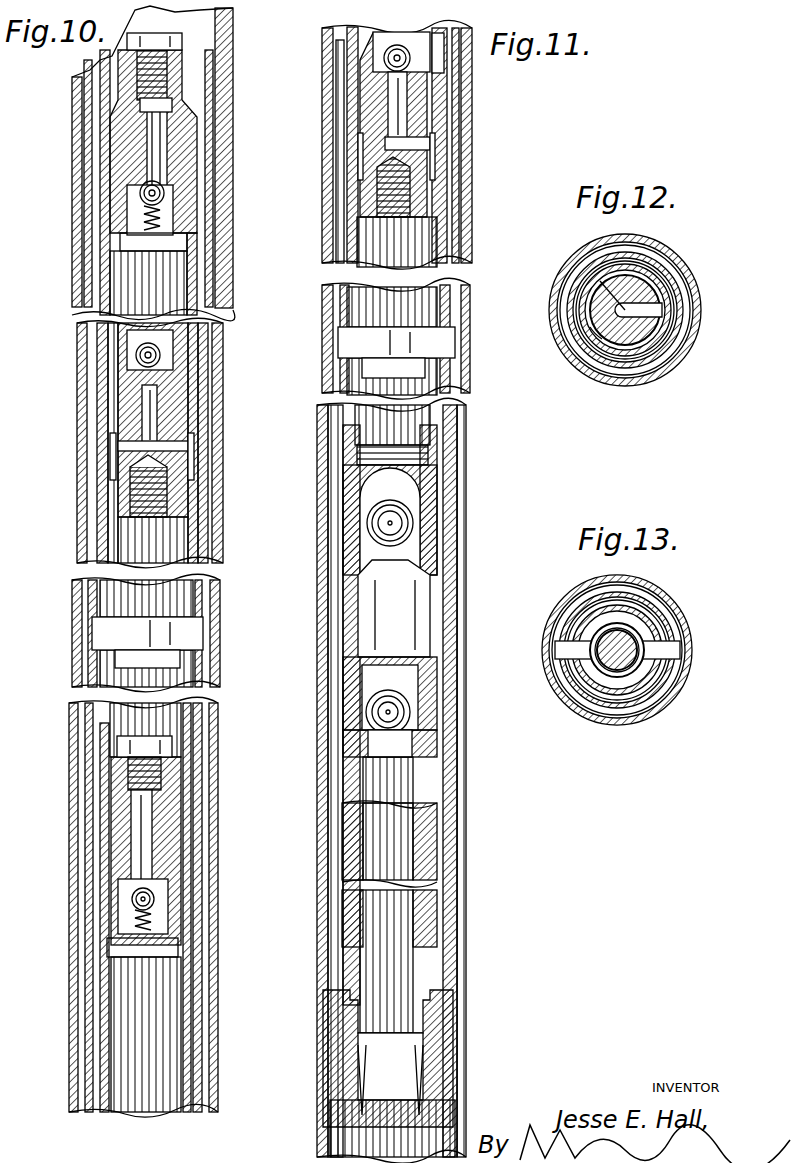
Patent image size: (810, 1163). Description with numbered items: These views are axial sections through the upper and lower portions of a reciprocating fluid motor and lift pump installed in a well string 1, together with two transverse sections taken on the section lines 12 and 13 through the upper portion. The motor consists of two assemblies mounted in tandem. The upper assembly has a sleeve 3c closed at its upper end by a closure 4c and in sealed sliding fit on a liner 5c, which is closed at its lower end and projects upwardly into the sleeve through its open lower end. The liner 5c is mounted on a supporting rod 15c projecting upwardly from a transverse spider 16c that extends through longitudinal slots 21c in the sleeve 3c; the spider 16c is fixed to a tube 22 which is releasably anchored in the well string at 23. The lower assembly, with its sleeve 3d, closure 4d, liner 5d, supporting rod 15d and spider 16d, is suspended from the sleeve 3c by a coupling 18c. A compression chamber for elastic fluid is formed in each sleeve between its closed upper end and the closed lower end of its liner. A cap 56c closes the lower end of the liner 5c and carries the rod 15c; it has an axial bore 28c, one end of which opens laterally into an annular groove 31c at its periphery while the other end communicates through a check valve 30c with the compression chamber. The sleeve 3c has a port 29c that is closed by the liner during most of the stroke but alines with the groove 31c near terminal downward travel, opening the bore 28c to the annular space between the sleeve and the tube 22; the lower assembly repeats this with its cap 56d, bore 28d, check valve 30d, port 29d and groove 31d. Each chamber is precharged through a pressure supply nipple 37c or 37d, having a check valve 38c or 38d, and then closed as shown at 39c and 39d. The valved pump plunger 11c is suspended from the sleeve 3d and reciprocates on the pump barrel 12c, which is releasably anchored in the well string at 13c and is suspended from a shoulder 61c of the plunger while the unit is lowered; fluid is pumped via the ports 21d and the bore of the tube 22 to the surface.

In FIG. 10, the well string 1 is at (78, 518).
In FIG. 11, the well string 1 is at (468, 182).
In FIG. 12, the well string 1 is at (680, 260).
In FIG. 13, the well string 1 is at (670, 614).
In FIG. 10, the tube 22 is at (92, 215).
In FIG. 11, the tube 22 is at (458, 222).
In FIG. 12, the tube 22 is at (674, 350).
In FIG. 13, the tube 22 is at (680, 650).
In FIG. 10, the sleeve 3c is at (106, 278).
In FIG. 12, the sleeve 3c is at (658, 352).
In FIG. 13, the sleeve 3c is at (592, 602).
In FIG. 10, the sleeve 3d is at (102, 1022).
In FIG. 11, the sleeve 3d is at (352, 198).
In FIG. 10, the closure 4c is at (120, 125).
In FIG. 10, the closure 4d is at (172, 835).
In FIG. 10, the liner 5c is at (112, 300).
In FIG. 10, the liner 5d is at (100, 1110).
In FIG. 11, the liner 5d is at (443, 70).
In FIG. 10, the anchoring means 23 is at (163, 120).
In FIG. 10, the pressure supply nipple 37c is at (157, 120).
In FIG. 10, the pressure supply nipple 37d is at (138, 840).
In FIG. 10, the nipple closure 39c is at (178, 40).
In FIG. 10, the nipple closure 39d is at (172, 746).
In FIG. 10, the check valve 38c is at (165, 195).
In FIG. 10, the check valve 38d is at (132, 905).
In FIG. 10, the cap 56c is at (125, 410).
In FIG. 12, the cap 56c is at (612, 345).
In FIG. 11, the cap 56d is at (375, 147).
In FIG. 10, the check valve 30c is at (158, 352).
In FIG. 11, the check valve 30d is at (392, 58).
In FIG. 10, the axial bore 28c is at (158, 410).
In FIG. 12, the axial bore 28c is at (600, 281).
In FIG. 11, the axial bore 28d is at (403, 112).
In FIG. 10, the port 29c is at (175, 445).
In FIG. 12, the port 29c is at (666, 310).
In FIG. 11, the port 29d is at (430, 145).
In FIG. 10, the annular groove 31c is at (192, 470).
In FIG. 12, the annular groove 31c is at (590, 342).
In FIG. 11, the annular groove 31d is at (435, 175).
In FIG. 10, the supporting rod 15c is at (140, 540).
In FIG. 13, the supporting rod 15c is at (607, 667).
In FIG. 11, the supporting rod 15d is at (395, 245).
In FIG. 10, the section line 12— 12 is at (74, 445).
In FIG. 10, the section line 13— 13 is at (68, 612).
In FIG. 10, the longitudinal slots 21c is at (102, 605).
In FIG. 13, the longitudinal slots 21c is at (565, 643).
In FIG. 11, the ports 21d is at (350, 310).
In FIG. 10, the transverse spider 16c is at (118, 636).
In FIG. 13, the transverse spider 16c is at (596, 660).
In FIG. 11, the transverse spider 16d is at (430, 340).
In FIG. 10, the coupling 18c is at (104, 782).
In FIG. 11, the valved pump plunger 11c is at (360, 565).
In FIG. 11, the pump barrel 12c is at (360, 770).
In FIG. 11, the shoulder 61c is at (437, 915).
In FIG. 11, the anchoring means 13c is at (350, 1012).